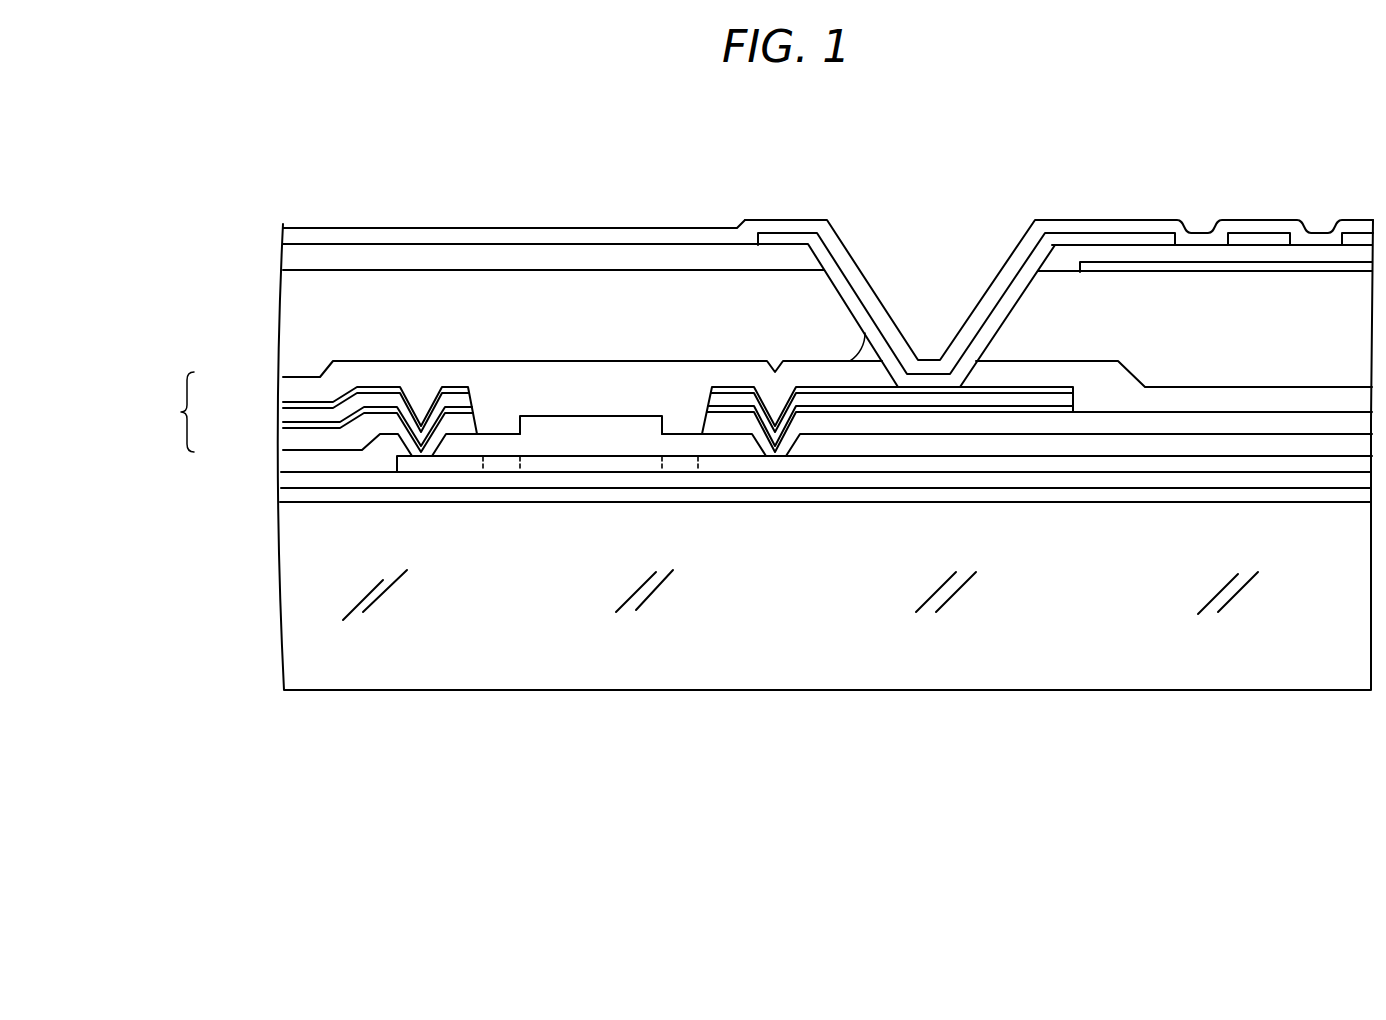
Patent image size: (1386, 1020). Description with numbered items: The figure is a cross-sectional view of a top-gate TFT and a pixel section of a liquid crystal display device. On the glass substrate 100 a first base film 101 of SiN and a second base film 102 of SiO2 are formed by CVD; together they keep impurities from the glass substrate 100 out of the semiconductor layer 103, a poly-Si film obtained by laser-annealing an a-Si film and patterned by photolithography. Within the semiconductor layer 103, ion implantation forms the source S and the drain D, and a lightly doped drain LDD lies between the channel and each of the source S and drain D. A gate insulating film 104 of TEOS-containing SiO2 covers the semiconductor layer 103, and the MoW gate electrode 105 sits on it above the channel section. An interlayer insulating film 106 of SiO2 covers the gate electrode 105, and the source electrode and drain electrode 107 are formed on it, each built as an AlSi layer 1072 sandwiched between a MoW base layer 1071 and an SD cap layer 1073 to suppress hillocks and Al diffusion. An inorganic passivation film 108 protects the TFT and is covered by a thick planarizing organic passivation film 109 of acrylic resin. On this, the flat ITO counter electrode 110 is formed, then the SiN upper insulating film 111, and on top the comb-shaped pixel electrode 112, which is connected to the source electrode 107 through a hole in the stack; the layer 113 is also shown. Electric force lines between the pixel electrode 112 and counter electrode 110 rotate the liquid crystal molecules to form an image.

The glass substrate 100 is at (327, 657).
The first base film 101 is at (281, 503).
The second base film 102 is at (284, 491).
The semiconductor layer 103 is at (562, 465).
The gate insulating film 104 is at (284, 481).
The gate electrode 105 is at (604, 425).
The interlayer insulating film 106 is at (283, 467).
The source electrode / drain electrode 107 is at (167, 412).
The base layer 1071 is at (289, 447).
The AlSi layer 1072 is at (289, 421).
The SD cap layer 1073 is at (289, 402).
The inorganic passivation film 108 is at (292, 384).
The organic passivation film 109 is at (293, 293).
The counter electrode 110 is at (1102, 268).
The upper insulating film 111 is at (706, 252).
The pixel electrode 112 is at (1156, 238).
The conductive film 113 is at (372, 240).
The drain D is at (433, 465).
The source S is at (760, 465).
The lightly doped drain layer LDD is at (498, 465).